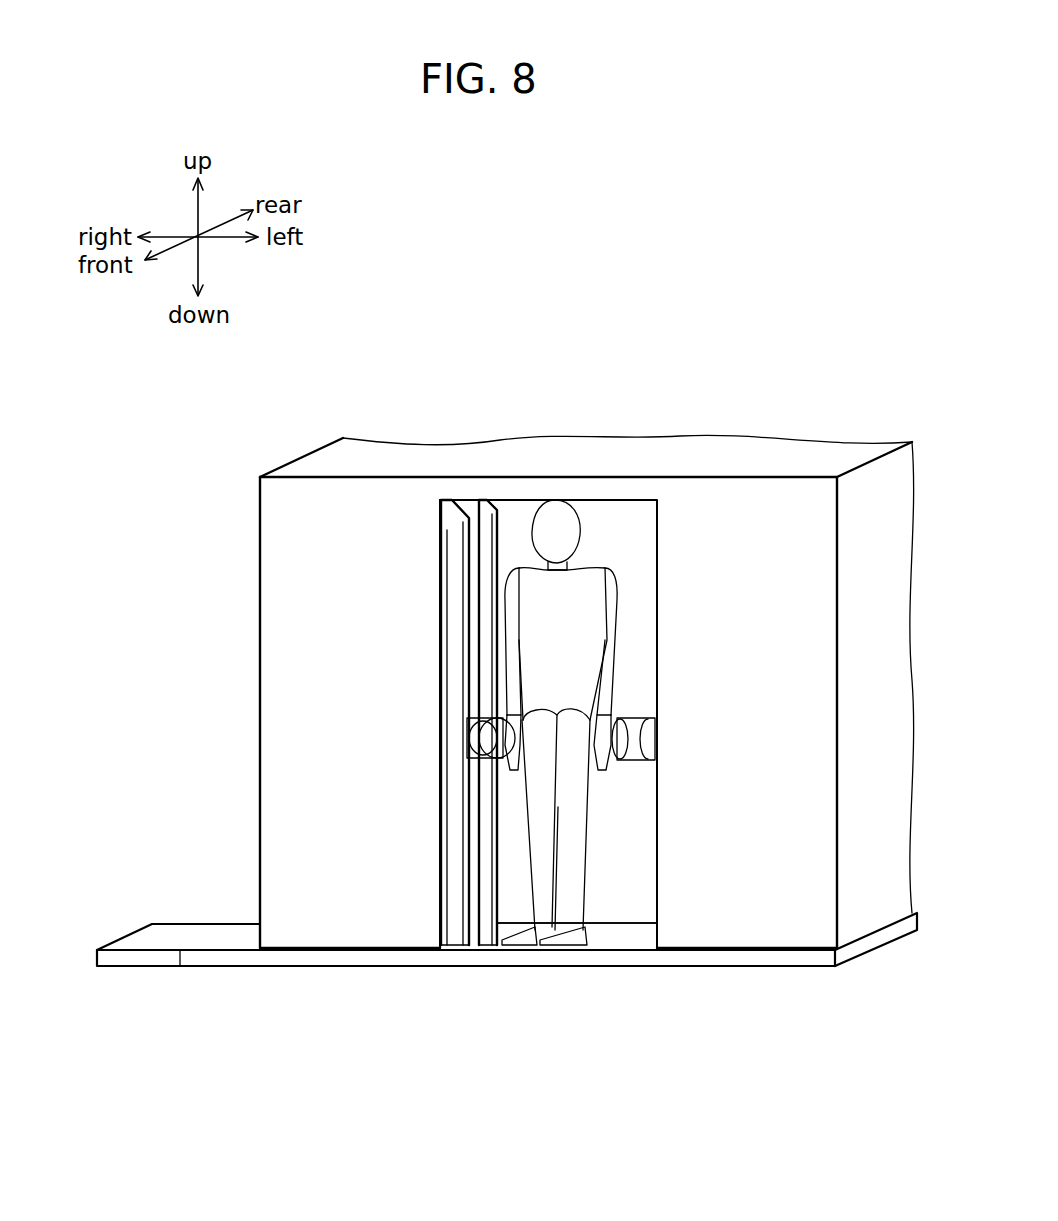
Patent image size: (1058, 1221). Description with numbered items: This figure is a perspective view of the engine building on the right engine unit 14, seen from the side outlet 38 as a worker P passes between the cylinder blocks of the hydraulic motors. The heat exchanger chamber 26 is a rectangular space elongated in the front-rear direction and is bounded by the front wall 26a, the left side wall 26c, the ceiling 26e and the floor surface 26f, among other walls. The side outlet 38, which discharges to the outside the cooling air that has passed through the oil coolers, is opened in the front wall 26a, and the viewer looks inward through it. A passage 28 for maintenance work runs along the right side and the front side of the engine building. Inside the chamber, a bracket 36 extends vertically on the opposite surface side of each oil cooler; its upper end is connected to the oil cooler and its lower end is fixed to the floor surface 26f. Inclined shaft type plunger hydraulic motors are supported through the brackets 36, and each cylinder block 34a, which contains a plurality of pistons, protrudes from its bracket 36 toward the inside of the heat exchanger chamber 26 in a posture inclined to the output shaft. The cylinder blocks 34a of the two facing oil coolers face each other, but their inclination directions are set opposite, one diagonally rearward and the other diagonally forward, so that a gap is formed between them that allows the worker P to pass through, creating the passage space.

The right engine unit 14 is at (226, 970).
The passage 28 is at (168, 930).
The heat exchanger chamber 26 is at (697, 465).
The ceiling 26e is at (805, 460).
The front wall 26a is at (745, 930).
The left side wall 26c is at (865, 912).
The floor surface 26f is at (605, 940).
The side outlet 38 is at (657, 908).
The bracket 36 is at (475, 508).
The worker P is at (553, 520).
The cylinder block 34a is at (502, 705).